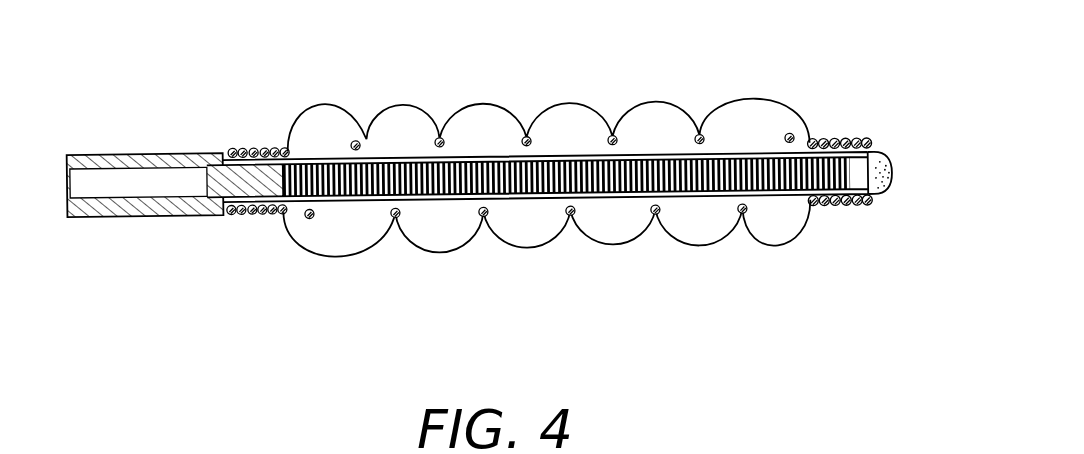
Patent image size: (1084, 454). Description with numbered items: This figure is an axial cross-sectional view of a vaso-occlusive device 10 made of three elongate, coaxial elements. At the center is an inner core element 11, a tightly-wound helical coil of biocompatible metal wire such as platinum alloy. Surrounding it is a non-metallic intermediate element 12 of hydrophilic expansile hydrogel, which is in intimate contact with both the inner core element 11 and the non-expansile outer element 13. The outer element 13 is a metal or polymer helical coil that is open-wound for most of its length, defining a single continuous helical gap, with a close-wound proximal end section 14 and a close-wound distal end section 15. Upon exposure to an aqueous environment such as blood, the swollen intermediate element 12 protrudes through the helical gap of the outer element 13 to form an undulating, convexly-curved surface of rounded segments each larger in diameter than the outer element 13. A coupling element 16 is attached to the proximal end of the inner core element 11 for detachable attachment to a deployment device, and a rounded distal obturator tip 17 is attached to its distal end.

The vaso-occlusive device 10 is at (558, 90).
The inner core element 11 is at (437, 205).
The intermediate element 12 is at (615, 250).
The outer element 13 is at (703, 136).
The proximal end section 14 is at (262, 220).
The distal end section 15 is at (855, 212).
The coupling element 16 is at (143, 215).
The distal obturator tip 17 is at (882, 145).